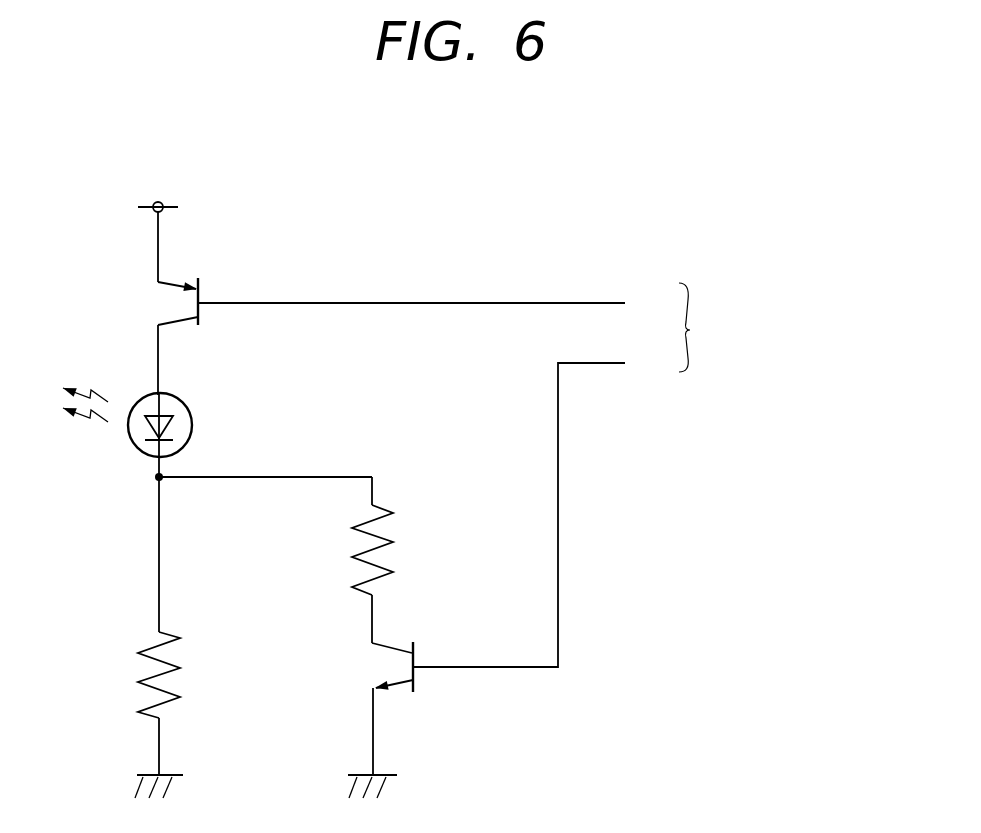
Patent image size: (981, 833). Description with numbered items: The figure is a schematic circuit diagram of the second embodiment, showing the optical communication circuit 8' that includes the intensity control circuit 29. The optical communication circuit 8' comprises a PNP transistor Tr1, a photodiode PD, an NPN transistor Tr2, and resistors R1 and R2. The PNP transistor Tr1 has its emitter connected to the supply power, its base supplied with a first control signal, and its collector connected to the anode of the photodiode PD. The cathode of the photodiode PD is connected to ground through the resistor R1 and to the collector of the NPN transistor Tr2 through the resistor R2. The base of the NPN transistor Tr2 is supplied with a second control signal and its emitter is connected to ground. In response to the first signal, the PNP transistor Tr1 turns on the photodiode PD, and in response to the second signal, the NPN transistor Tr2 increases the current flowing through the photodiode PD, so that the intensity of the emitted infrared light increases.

The optical communication circuit 8' is at (457, 484).
The intensity control circuit 29 is at (451, 410).
The PNP transistor Tr1 is at (199, 287).
The NPN transistor Tr2 is at (416, 644).
The photodiode PD is at (177, 395).
The resistor R1 is at (177, 634).
The resistor R2 is at (386, 508).